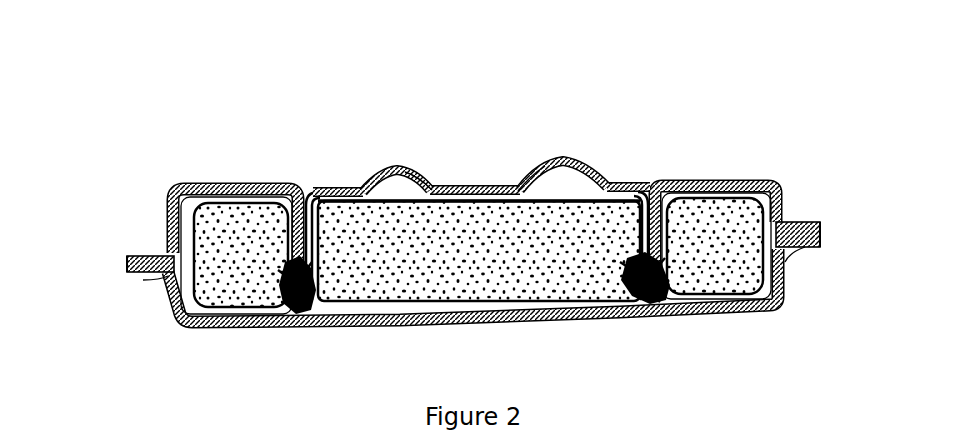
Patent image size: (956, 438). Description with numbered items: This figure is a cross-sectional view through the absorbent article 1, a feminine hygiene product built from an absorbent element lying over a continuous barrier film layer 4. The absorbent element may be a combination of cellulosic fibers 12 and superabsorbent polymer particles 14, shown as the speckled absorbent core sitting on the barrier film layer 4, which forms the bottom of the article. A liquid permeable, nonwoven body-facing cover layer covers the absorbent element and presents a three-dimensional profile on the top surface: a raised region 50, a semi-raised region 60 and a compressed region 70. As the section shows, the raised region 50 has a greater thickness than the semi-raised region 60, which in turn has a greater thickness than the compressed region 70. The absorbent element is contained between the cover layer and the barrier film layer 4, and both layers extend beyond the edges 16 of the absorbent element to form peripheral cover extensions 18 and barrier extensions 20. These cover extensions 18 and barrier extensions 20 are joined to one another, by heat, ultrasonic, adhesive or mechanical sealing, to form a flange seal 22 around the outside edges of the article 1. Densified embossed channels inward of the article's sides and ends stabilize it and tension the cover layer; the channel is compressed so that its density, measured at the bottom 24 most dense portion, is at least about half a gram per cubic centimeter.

The article 1 is at (786, 131).
The barrier film layer 4 is at (393, 173).
The cellulosic fibers 12 is at (567, 300).
The superabsorbent polymer particles 14 is at (245, 198).
The edges of the absorbent element 16 is at (167, 292).
The peripheral cover extensions 18 is at (137, 253).
The barrier extensions 20 is at (143, 280).
The flange seal 22 is at (123, 262).
The bottom most dense portion of the channel 24 is at (285, 315).
The raised region 50 is at (397, 177).
The semi-raised region 60 is at (330, 187).
The compressed region 70 is at (435, 187).